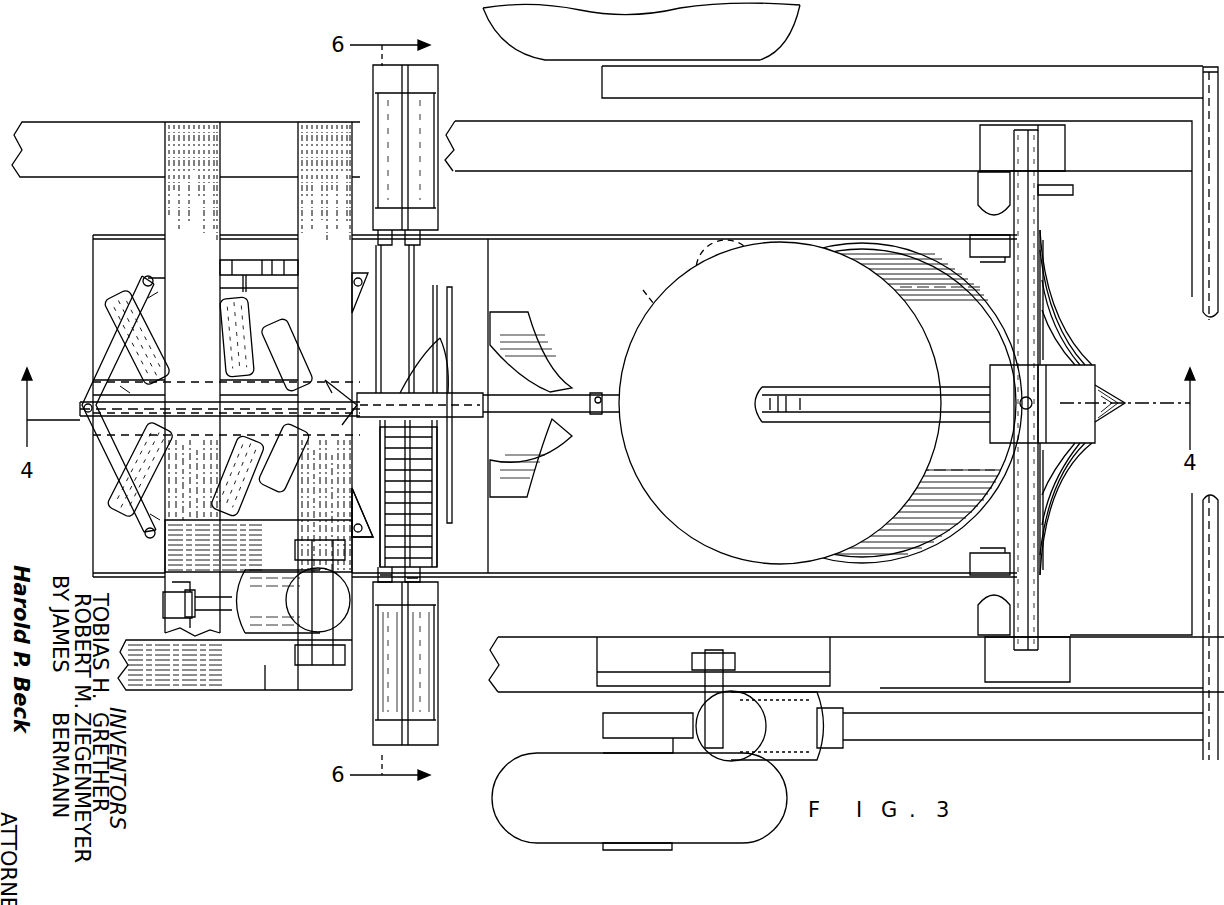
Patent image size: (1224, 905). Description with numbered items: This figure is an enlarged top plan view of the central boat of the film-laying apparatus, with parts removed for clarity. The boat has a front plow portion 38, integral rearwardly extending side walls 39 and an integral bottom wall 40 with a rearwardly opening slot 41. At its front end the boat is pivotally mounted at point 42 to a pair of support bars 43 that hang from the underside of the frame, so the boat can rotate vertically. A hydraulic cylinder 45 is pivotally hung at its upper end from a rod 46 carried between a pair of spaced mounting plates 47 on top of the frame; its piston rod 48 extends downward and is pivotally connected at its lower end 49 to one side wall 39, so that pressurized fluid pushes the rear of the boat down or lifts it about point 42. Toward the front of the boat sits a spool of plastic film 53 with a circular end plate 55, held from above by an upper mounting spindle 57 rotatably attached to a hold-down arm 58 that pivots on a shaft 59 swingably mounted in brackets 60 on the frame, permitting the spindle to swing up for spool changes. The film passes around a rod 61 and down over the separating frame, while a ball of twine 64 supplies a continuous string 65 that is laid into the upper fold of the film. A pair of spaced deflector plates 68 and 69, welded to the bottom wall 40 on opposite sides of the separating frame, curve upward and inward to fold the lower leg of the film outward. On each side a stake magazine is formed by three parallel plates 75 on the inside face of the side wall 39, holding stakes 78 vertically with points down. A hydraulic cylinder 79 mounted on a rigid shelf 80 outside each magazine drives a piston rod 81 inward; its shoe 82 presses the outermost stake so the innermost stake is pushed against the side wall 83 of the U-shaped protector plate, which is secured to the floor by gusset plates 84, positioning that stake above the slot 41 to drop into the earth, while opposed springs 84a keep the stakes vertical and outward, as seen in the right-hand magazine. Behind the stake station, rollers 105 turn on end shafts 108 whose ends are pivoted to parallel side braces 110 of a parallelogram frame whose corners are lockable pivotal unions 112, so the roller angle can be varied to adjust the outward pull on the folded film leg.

The front plow portion 38 is at (1058, 455).
The side walls 39 is at (628, 235).
The bottom wall 40 is at (103, 300).
The rearwardly opening slot 41 is at (100, 417).
The pivot point 42 is at (985, 247).
The support bars 43 is at (985, 190).
The hydraulic cylinder 45 is at (263, 603).
The rod 46 is at (325, 668).
The mounting plates 47 is at (298, 716).
The piston rod 48 is at (228, 597).
The lower end of piston rod 49 is at (165, 604).
The spool of plastic film 53 is at (955, 495).
The circular end plate 55 is at (690, 505).
The upper mounting spindle 57 is at (766, 407).
The hold-down arm 58 is at (848, 388).
The shaft 59 is at (1025, 612).
The brackets 60 is at (1060, 150).
The rod 61 is at (610, 415).
The ball of twine 64 is at (700, 262).
The string 65 is at (647, 300).
The deflector plate 68 is at (522, 338).
The deflector plate 69 is at (538, 468).
The parallel plates 75 is at (433, 292).
The stakes 78 is at (402, 554).
The hydraulic cylinder 79 is at (420, 690).
The rigid shelf 80 is at (440, 632).
The piston rod 81 is at (378, 575).
The pushing shoe / top wall of protector plate 82 is at (470, 394).
The side walls of protector plate 83 is at (442, 340).
The gusset plates 84 is at (450, 300).
The opposed springs 84a is at (452, 433).
The rollers 105 is at (248, 325).
The end shafts 108 is at (247, 298).
The side braces 110 is at (240, 417).
The pivotal unions 112 is at (146, 281).